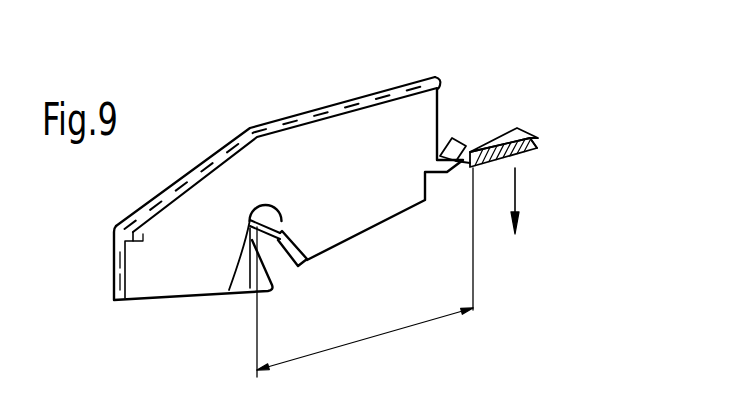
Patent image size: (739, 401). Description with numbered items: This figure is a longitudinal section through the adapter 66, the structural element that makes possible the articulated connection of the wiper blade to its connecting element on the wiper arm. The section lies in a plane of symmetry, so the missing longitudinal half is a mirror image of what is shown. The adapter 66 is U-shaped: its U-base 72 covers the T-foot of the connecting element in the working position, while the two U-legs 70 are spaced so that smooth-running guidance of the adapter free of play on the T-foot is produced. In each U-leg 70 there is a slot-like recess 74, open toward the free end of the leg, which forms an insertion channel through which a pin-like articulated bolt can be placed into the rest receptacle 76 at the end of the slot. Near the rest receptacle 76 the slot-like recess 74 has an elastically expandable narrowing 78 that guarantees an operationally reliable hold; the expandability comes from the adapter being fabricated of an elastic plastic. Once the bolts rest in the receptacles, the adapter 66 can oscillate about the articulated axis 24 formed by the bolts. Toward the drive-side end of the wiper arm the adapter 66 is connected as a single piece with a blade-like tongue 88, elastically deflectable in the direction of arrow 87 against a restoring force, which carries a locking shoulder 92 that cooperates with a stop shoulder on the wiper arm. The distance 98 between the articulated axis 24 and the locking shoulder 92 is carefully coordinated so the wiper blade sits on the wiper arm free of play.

The articulated axis 24 is at (250, 228).
The adapter 66 is at (260, 122).
The U-legs 70 is at (366, 215).
The U-base 72 is at (428, 78).
The slot-like recesses 74 is at (287, 267).
The rest receptacles 76 is at (229, 290).
The narrowings 78 is at (278, 262).
The arrow 87 is at (518, 192).
The tongue 88 is at (541, 160).
The locking shoulder 92 is at (497, 133).
The distance 98 is at (375, 336).